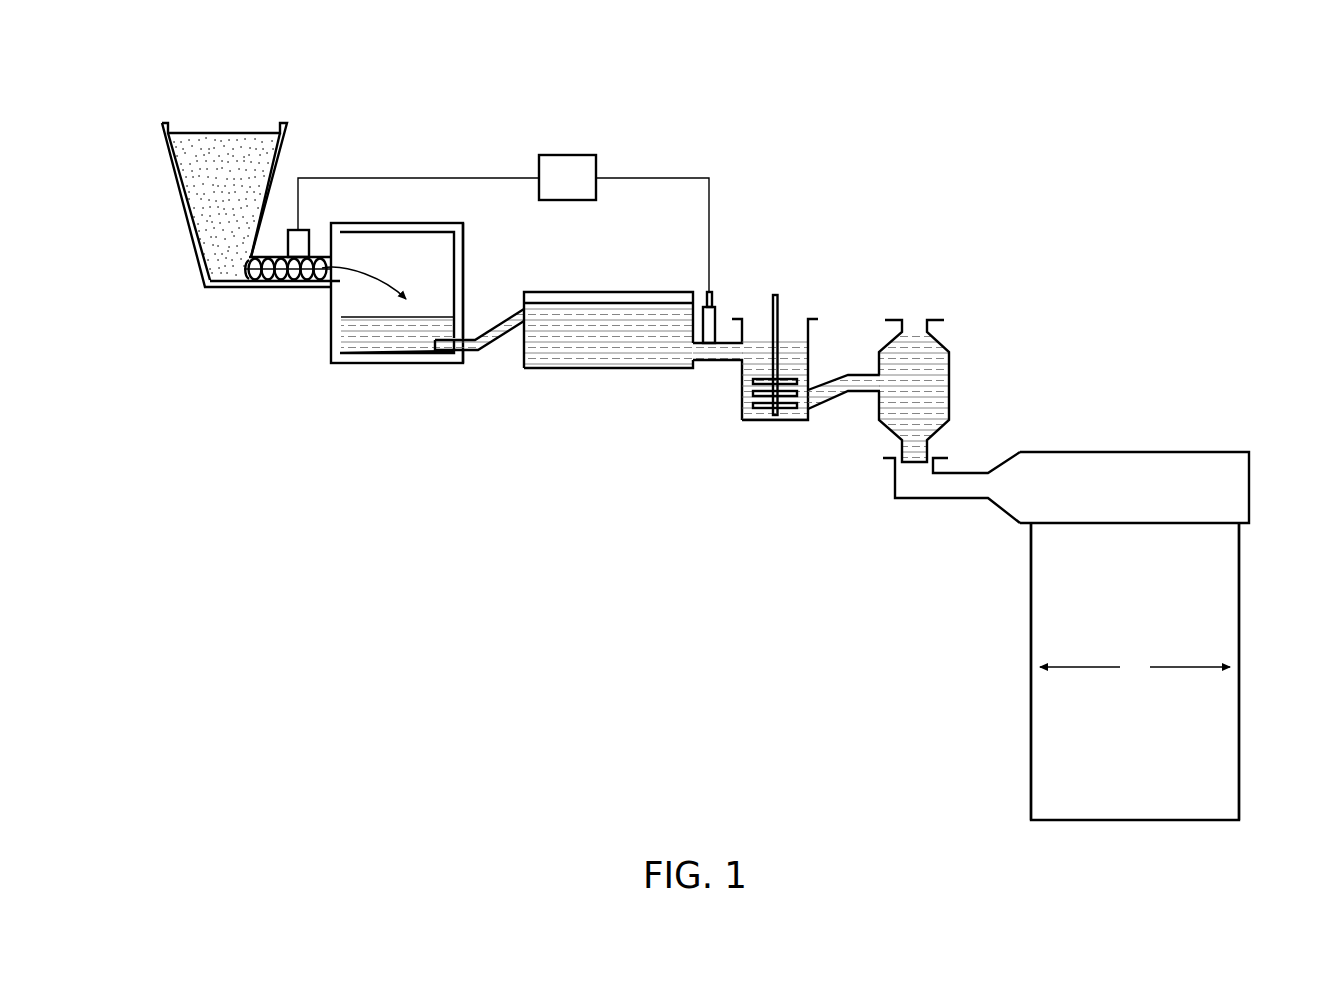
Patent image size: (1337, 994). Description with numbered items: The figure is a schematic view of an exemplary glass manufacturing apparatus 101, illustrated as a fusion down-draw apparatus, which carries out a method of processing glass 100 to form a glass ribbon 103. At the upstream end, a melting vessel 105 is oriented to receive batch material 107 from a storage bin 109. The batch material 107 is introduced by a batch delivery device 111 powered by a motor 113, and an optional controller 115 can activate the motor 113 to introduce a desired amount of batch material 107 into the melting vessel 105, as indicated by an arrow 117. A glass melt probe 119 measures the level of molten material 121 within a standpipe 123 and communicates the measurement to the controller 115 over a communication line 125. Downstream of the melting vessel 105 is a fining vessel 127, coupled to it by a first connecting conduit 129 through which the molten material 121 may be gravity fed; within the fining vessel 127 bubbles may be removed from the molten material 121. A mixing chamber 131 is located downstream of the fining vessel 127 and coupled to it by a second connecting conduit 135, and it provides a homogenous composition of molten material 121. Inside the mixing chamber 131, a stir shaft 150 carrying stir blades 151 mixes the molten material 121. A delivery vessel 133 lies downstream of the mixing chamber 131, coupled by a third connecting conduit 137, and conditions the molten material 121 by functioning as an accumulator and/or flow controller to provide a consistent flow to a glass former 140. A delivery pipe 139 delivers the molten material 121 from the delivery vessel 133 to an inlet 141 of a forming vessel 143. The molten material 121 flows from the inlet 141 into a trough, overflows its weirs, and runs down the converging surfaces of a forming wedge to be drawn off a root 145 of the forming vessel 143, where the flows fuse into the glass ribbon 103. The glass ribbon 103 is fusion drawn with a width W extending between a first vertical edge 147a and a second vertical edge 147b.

The method of processing glass 100 is at (1159, 241).
The glass manufacturing apparatus 101 is at (957, 230).
The glass ribbon 103 is at (1105, 532).
The melting vessel 105 is at (373, 388).
The batch material 107 is at (217, 134).
The storage bin 109 is at (182, 206).
The batch delivery device 111 is at (276, 281).
The motor 113 is at (305, 227).
The controller 115 is at (565, 154).
The arrow 117 is at (360, 273).
The glass melt probe 119 is at (705, 295).
The molten material 121 is at (432, 318).
The standpipe 123 is at (718, 314).
The communication line 125 is at (650, 177).
The fining vessel 127 is at (605, 292).
The first connecting conduit 129 is at (498, 317).
The mixing chamber 131 is at (811, 342).
The delivery vessel 133 is at (950, 358).
The second connecting conduit 135 is at (722, 362).
The third connecting conduit 137 is at (829, 404).
The delivery pipe 139 is at (929, 450).
The glass former 140 is at (1182, 416).
The inlet 141 is at (895, 477).
The forming vessel 143 is at (1047, 451).
The root 145 is at (1172, 526).
The first vertical edge 147a is at (1031, 612).
The second vertical edge 147b is at (1242, 612).
The stir shaft 150 is at (780, 303).
The stir blades 151 is at (765, 410).